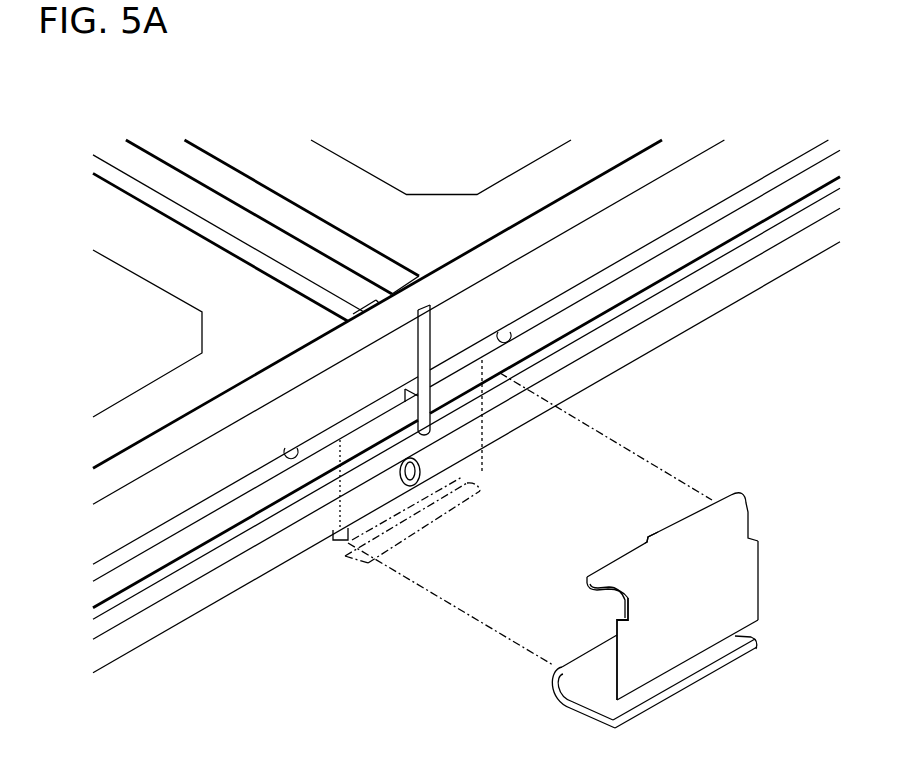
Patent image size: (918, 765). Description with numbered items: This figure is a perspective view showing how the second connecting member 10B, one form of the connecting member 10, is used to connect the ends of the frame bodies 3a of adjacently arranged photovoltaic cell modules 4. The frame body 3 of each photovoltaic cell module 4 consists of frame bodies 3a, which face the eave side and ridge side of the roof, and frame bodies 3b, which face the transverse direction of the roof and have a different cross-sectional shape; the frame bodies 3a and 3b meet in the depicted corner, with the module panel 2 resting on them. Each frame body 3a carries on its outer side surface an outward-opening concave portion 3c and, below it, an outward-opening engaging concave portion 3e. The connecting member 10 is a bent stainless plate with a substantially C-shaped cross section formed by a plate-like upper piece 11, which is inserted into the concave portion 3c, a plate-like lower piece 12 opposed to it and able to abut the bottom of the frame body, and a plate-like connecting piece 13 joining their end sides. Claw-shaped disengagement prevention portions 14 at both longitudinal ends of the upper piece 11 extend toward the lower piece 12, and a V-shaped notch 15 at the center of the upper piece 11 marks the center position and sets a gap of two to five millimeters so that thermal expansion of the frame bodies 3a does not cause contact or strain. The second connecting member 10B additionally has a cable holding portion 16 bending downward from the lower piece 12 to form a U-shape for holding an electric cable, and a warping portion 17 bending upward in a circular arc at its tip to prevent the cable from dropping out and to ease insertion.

The panel 2 is at (367, 186).
The frame body 3 is at (465, 422).
The frame body 3a is at (599, 190).
The frame body 3b is at (263, 202).
The concave portion 3c is at (502, 332).
The engaging concave portion 3e is at (668, 300).
The photovoltaic cell module 4 is at (759, 292).
The connecting member 10 is at (571, 535).
The second connecting member 10B is at (487, 427).
The upper piece 11 is at (376, 392).
The lower piece 12 is at (595, 668).
The connecting piece 13 is at (749, 569).
The disengagement prevention portion 14 is at (742, 510).
The notch 15 is at (655, 532).
The cable holding portion 16 is at (585, 703).
The warping portion 17 is at (650, 705).